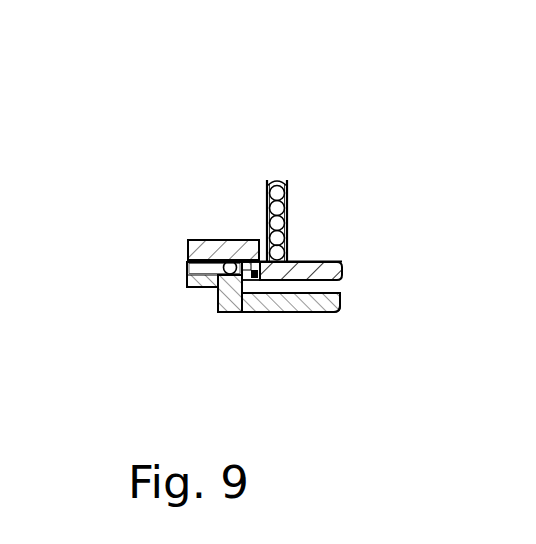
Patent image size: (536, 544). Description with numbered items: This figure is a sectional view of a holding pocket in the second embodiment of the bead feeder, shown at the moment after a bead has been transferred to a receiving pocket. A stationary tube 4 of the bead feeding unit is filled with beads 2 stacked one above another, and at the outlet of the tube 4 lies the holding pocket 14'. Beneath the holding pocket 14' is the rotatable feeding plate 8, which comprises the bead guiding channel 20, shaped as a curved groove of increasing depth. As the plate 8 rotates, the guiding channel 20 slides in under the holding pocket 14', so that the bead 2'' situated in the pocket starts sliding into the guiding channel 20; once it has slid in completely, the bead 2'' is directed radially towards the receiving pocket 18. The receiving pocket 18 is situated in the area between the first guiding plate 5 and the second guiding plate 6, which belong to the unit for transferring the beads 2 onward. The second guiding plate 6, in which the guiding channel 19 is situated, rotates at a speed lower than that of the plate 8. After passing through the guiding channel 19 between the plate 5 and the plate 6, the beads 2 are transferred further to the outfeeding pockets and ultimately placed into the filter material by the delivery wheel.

The bead 2 is at (332, 182).
The bead 2'' is at (156, 228).
The tube 4 is at (268, 178).
The first guiding plate 5 is at (192, 281).
The second guiding plate 6 is at (225, 242).
The plate 8 is at (295, 278).
The holding pocket 14' is at (338, 326).
The receiving pocket 18 is at (237, 293).
The guiding channel 19 is at (210, 270).
The guiding channel 20 is at (258, 282).